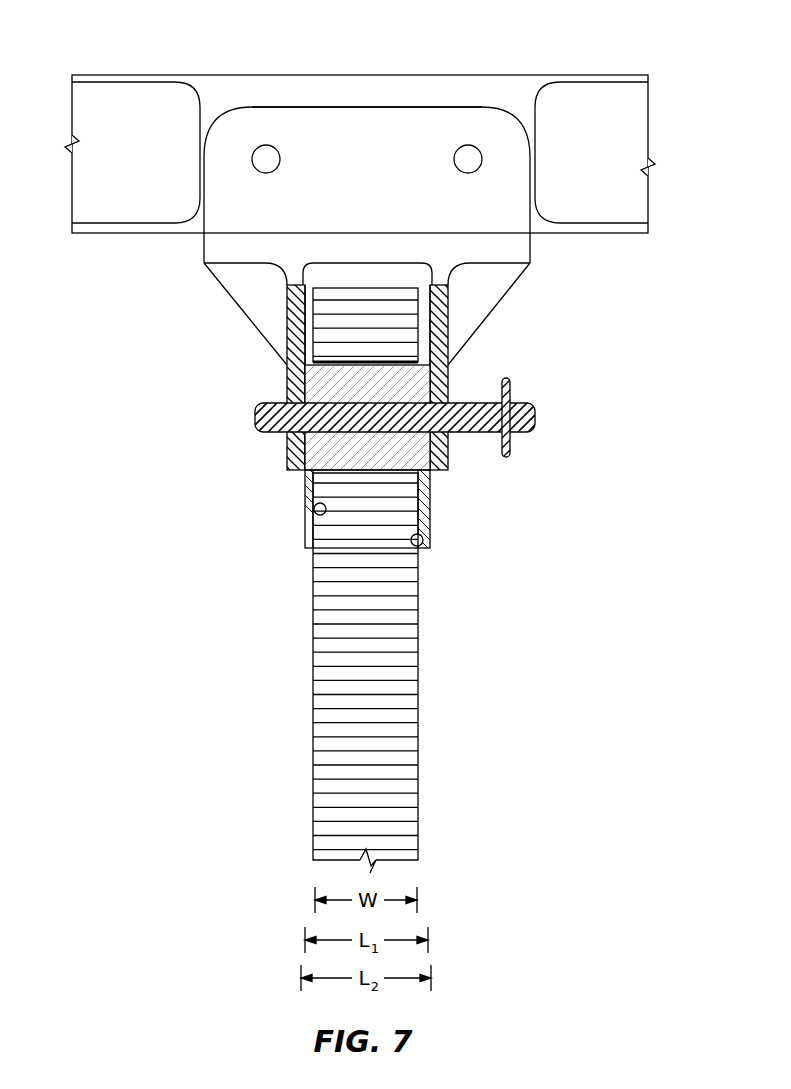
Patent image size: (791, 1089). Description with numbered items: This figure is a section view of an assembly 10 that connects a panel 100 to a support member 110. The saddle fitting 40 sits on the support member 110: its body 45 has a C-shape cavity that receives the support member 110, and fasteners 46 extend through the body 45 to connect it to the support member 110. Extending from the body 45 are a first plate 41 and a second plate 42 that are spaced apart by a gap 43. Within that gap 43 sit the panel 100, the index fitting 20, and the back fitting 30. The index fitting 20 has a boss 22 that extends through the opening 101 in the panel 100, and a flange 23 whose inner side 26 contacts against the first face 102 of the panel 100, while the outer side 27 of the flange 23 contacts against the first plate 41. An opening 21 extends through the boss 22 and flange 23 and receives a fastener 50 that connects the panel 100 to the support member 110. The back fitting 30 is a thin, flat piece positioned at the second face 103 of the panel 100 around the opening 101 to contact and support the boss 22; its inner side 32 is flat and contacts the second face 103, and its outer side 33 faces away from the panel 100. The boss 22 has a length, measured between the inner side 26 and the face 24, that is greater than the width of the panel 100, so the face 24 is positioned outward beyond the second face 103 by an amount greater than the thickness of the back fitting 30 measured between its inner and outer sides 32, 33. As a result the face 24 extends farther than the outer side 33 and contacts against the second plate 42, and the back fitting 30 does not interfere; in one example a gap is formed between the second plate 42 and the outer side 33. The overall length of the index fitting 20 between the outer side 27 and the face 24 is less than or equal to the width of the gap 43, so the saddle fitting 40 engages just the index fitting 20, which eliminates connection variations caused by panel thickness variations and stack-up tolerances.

The assembly 10 is at (255, 528).
The index fitting 20 is at (395, 420).
The opening 21 is at (330, 402).
The boss 22 is at (367, 453).
The flange 23 is at (304, 548).
The face 24 is at (445, 452).
The inner side 26 is at (318, 512).
The outer side 27 is at (305, 487).
The back fitting 30 is at (432, 537).
The inner side 32 is at (422, 545).
The outer side 33 is at (428, 497).
The saddle fitting 40 is at (560, 260).
The first plate 41 is at (290, 378).
The second plate 42 is at (440, 393).
The gap 43 is at (353, 348).
The body 45 is at (377, 157).
The fastener 46 is at (262, 145).
The fastener 50 is at (538, 413).
The panel 100 is at (375, 808).
The opening 101 is at (430, 513).
The first face 102 is at (315, 810).
The second face 103 is at (417, 828).
The support member 110 is at (605, 133).